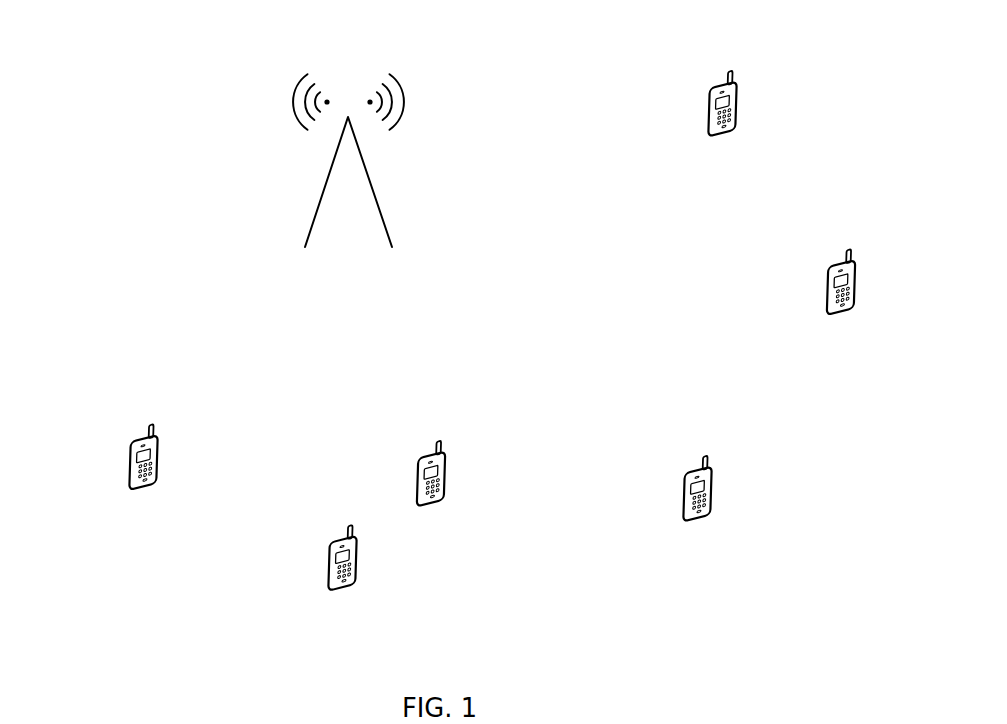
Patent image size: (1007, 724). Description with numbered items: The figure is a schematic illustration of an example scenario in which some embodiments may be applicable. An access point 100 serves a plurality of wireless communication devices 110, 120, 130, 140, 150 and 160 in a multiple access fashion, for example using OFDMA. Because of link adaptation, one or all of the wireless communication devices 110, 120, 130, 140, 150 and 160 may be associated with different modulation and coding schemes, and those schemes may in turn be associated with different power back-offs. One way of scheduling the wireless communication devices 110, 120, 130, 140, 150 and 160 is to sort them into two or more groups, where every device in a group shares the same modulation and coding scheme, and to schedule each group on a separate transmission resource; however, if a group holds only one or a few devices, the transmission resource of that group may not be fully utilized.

The access point 100 is at (328, 173).
The wireless communication device 110 is at (708, 95).
The wireless communication device 120 is at (825, 275).
The wireless communication device 130 is at (678, 477).
The wireless communication device 140 is at (413, 467).
The wireless communication device 150 is at (325, 552).
The wireless communication device 160 is at (127, 448).